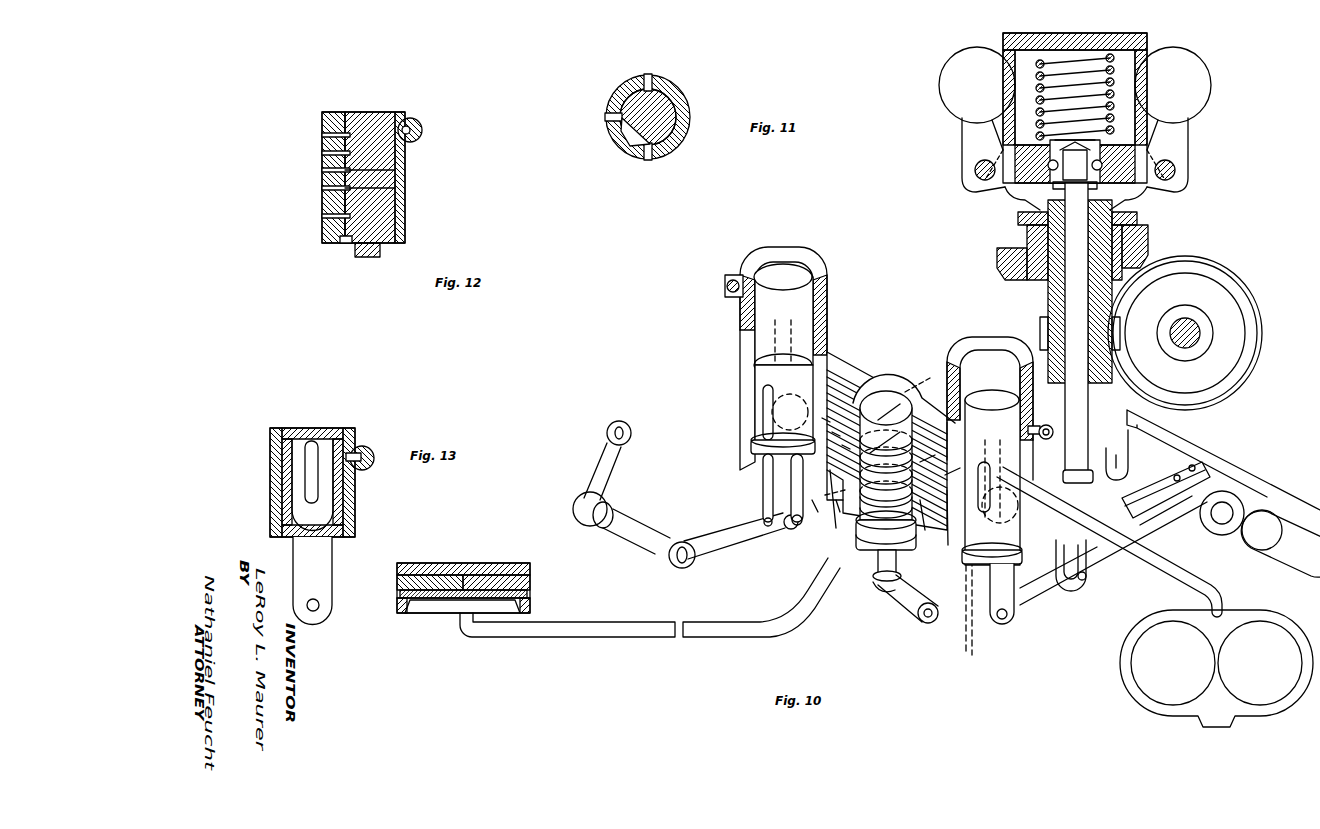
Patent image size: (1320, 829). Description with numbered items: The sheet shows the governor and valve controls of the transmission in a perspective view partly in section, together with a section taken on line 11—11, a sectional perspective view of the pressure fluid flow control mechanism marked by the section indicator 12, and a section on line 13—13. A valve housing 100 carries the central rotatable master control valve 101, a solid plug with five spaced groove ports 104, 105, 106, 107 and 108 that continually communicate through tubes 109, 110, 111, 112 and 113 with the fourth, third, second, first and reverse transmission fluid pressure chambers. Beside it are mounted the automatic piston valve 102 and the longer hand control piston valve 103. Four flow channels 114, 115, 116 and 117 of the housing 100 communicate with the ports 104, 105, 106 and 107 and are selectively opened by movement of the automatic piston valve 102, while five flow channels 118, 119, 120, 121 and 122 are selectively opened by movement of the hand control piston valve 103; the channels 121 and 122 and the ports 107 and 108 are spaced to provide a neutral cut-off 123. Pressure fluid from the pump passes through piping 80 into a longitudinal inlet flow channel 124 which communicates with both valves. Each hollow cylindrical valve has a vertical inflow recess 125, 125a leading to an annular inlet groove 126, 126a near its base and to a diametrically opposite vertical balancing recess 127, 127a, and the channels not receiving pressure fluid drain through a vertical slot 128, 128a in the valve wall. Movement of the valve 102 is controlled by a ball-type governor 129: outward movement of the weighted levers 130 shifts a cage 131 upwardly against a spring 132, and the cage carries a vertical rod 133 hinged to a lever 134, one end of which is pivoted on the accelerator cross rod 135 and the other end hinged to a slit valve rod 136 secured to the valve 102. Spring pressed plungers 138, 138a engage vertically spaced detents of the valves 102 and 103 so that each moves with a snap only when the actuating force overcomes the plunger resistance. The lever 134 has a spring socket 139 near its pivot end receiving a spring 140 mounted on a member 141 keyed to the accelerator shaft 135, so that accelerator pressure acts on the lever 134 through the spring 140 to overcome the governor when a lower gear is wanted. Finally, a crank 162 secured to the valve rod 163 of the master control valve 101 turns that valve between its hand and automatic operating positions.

In FIG. 10, the piping 80 is at (1185, 576).
In FIG. 10, the valve housing 100 is at (830, 348).
In FIG. 12, the master control valve 101 is at (400, 212).
In FIG. 11, the master control valve 101 is at (670, 105).
In FIG. 10, the master control valve 101 is at (888, 408).
In FIG. 10, the automatic piston valve 102 is at (1007, 538).
In FIG. 10, the hand control piston valve 103 is at (755, 375).
In FIG. 12, the groove port 104 is at (370, 112).
In FIG. 10, the groove port 104 is at (891, 415).
In FIG. 12, the groove port 105 is at (385, 128).
In FIG. 10, the groove port 105 is at (892, 441).
In FIG. 12, the groove port 106 is at (390, 170).
In FIG. 11, the groove port 106 is at (630, 140).
In FIG. 10, the groove port 106 is at (885, 505).
In FIG. 12, the groove port 107 is at (390, 188).
In FIG. 10, the groove port 107 is at (894, 538).
In FIG. 12, the groove port 108 is at (345, 243).
In FIG. 10, the groove port 108 is at (873, 540).
In FIG. 12, the tube 109 is at (335, 136).
In FIG. 12, the tube 110 is at (335, 154).
In FIG. 12, the tube 111 is at (335, 171).
In FIG. 12, the tube 112 is at (335, 189).
In FIG. 12, the tube 113 is at (335, 217).
In FIG. 10, the flow channel 114 is at (923, 453).
In FIG. 10, the flow channel 115 is at (947, 465).
In FIG. 11, the flow channel 116 is at (650, 162).
In FIG. 10, the flow channel 116 is at (934, 524).
In FIG. 10, the flow channel 117 is at (947, 527).
In FIG. 10, the flow channel 118 is at (825, 418).
In FIG. 10, the flow channel 119 is at (835, 432).
In FIG. 11, the flow channel 120 is at (648, 78).
In FIG. 10, the flow channel 120 is at (845, 445).
In FIG. 10, the flow channel 121 is at (817, 511).
In FIG. 10, the reverse channel 122 is at (822, 507).
In FIG. 10, the neutral cut-off 123 is at (839, 512).
In FIG. 12, the longitudinal inlet flow channel 124 is at (418, 128).
In FIG. 10, the longitudinal inlet flow channel 124 is at (1035, 487).
In FIG. 13, the vertical inflow recess 125 is at (355, 488).
In FIG. 10, the vertical inflow recess 125 is at (993, 460).
In FIG. 10, the vertical inflow recess 125a is at (805, 360).
In FIG. 13, the annular inlet groove 126 is at (352, 518).
In FIG. 10, the annular inlet groove 126 is at (1005, 565).
In FIG. 10, the annular inlet groove 126a is at (760, 447).
In FIG. 13, the vertical balancing recess 127 is at (270, 483).
In FIG. 10, the vertical balancing recess 127 is at (984, 480).
In FIG. 10, the vertical balancing recess 127a is at (762, 412).
In FIG. 13, the vertical slot 128 is at (310, 455).
In FIG. 10, the vertical slot 128 is at (990, 520).
In FIG. 10, the vertical slot 128a is at (785, 425).
In FIG. 10, the ball-type governor 129 is at (1165, 50).
In FIG. 10, the weighted levers 130 is at (1182, 135).
In FIG. 10, the cage 131 is at (1128, 157).
In FIG. 10, the spring 132 is at (1118, 82).
In FIG. 10, the vertical rod 133 is at (1085, 240).
In FIG. 10, the lever 134 is at (1126, 562).
In FIG. 10, the accelerator cross rod 135 is at (1292, 556).
In FIG. 13, the slit valve rod 136 is at (320, 574).
In FIG. 10, the slit valve rod 136 is at (1012, 605).
In FIG. 10, the spring pressed plunger 138 is at (1040, 424).
In FIG. 10, the spring pressed plunger 138a is at (737, 292).
In FIG. 10, the spring socket 139 is at (1213, 500).
In FIG. 10, the spring 140 is at (1150, 490).
In FIG. 10, the member 141 is at (1205, 472).
In FIG. 10, the crank 162 is at (905, 597).
In FIG. 10, the valve rod 163 is at (893, 575).
In FIG. 10, the section line 11— 11 is at (836, 490).
In FIG. 10, the section indicator 12 is at (912, 390).
In FIG. 10, the section line 13— 13 is at (966, 572).